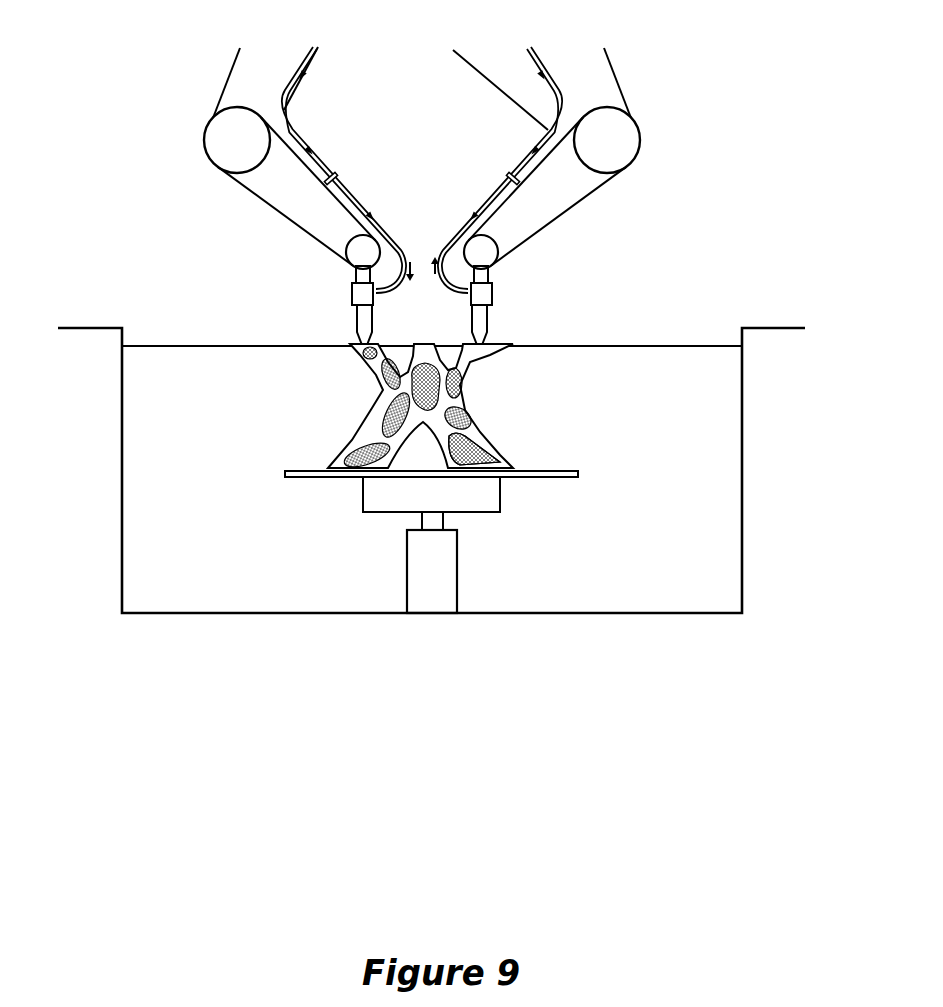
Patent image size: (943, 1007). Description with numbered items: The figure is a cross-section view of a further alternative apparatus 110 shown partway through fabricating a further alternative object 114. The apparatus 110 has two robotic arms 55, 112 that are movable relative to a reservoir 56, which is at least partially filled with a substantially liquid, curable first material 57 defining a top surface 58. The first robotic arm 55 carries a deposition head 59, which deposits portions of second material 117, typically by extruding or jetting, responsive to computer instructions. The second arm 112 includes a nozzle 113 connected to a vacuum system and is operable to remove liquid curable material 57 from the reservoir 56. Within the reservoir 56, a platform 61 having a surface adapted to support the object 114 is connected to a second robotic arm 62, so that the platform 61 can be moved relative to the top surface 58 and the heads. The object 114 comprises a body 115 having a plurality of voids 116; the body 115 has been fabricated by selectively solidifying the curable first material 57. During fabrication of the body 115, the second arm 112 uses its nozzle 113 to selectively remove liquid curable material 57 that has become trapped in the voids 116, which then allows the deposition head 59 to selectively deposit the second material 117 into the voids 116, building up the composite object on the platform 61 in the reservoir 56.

The apparatus 110 is at (135, 184).
The robotic arm 55 is at (286, 193).
The second robotic arm 112 is at (528, 216).
The deposition head 59 is at (352, 297).
The nozzle 113 is at (480, 323).
The second material 117 is at (356, 342).
The curable first material 57 is at (493, 344).
The top surface 58 is at (625, 345).
The reservoir 56 is at (743, 468).
The object 114 is at (442, 387).
The body 115 is at (377, 425).
The voids 116 is at (470, 448).
The platform 61 is at (570, 478).
The second robotic arm 62 is at (458, 570).